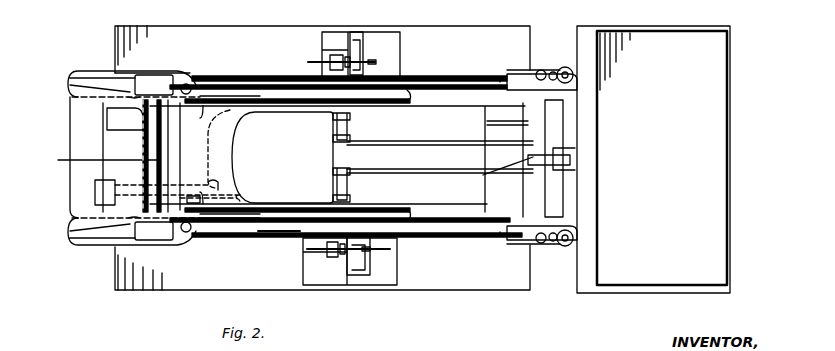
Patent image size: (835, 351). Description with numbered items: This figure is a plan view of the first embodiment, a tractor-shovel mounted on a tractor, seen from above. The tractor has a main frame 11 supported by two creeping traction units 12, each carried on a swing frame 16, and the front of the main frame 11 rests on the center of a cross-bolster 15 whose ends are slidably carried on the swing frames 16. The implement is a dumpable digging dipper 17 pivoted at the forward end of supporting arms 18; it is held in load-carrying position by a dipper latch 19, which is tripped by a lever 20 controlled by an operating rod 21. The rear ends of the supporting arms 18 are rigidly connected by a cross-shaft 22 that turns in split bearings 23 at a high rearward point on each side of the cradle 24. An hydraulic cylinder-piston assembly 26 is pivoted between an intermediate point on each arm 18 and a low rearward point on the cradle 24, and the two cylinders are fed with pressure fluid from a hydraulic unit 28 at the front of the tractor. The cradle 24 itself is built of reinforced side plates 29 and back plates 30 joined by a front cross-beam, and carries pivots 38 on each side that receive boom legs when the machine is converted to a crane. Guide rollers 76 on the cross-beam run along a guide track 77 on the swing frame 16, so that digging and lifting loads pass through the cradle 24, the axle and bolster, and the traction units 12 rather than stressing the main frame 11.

The main frame 11 is at (337, 158).
The creeping traction unit 12 is at (492, 48).
The cross-bolster 15 is at (367, 53).
The swing frame 16 is at (332, 52).
The digging dipper 17 is at (708, 168).
The supporting arm 18 is at (253, 80).
The dipper latch 19 is at (555, 160).
The lever 20 is at (540, 148).
The operating rod 21 is at (288, 235).
The cross-shaft 22 is at (109, 156).
The split bearing 23 is at (133, 97).
The cradle 24 is at (100, 88).
The hydraulic cylinder-piston assembly 26 is at (105, 70).
The hydraulic unit 28 is at (520, 125).
The side plate 29 is at (203, 100).
The back plate 30 is at (75, 127).
The pivot 38 is at (397, 102).
The guide roller 76 is at (330, 62).
The guide track 77 is at (330, 56).